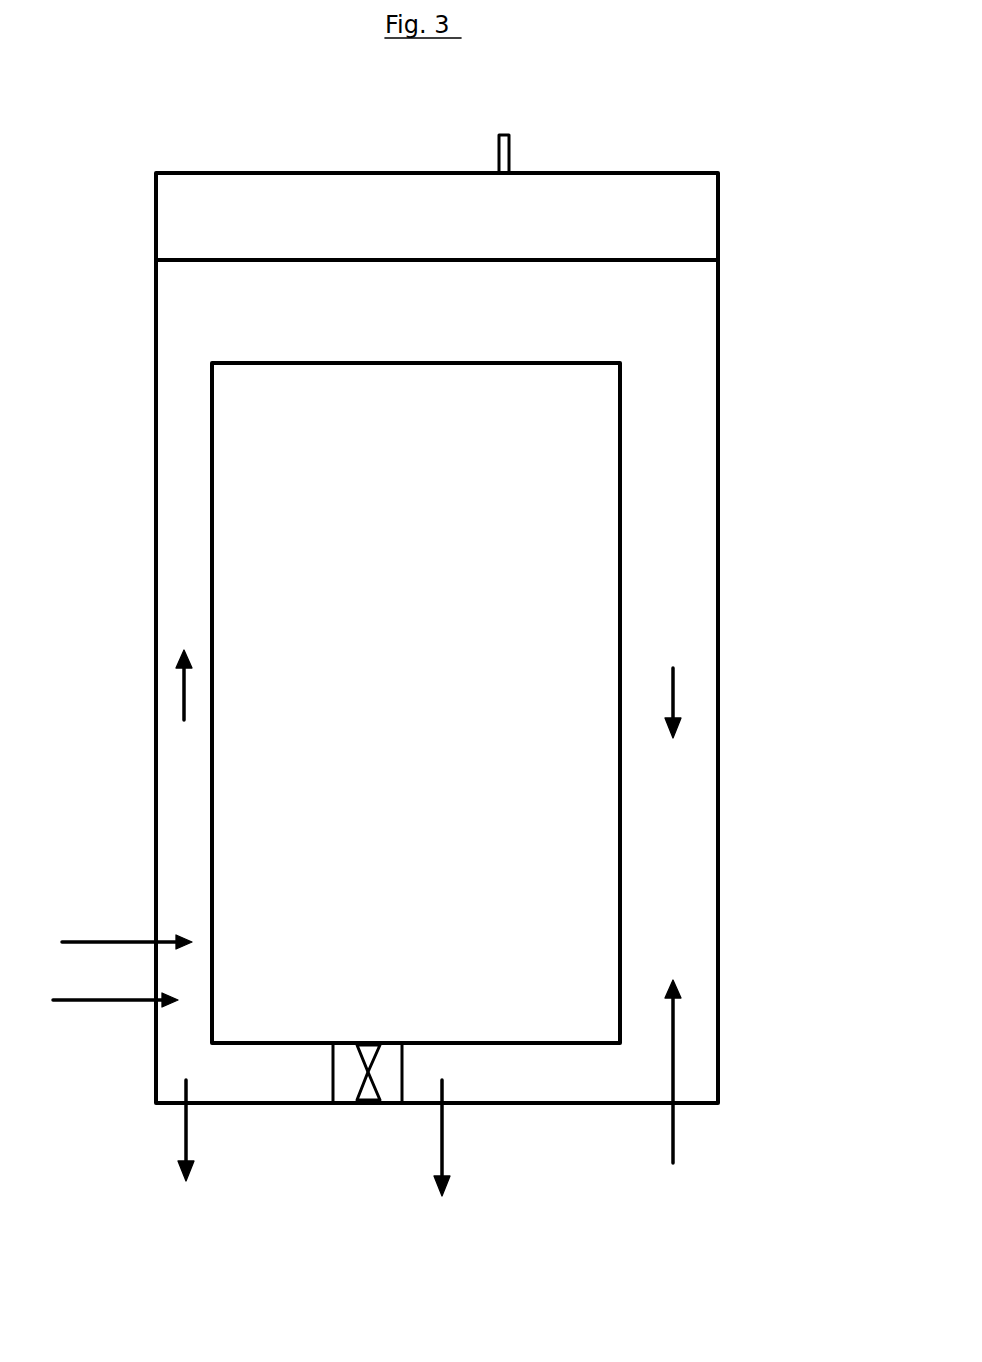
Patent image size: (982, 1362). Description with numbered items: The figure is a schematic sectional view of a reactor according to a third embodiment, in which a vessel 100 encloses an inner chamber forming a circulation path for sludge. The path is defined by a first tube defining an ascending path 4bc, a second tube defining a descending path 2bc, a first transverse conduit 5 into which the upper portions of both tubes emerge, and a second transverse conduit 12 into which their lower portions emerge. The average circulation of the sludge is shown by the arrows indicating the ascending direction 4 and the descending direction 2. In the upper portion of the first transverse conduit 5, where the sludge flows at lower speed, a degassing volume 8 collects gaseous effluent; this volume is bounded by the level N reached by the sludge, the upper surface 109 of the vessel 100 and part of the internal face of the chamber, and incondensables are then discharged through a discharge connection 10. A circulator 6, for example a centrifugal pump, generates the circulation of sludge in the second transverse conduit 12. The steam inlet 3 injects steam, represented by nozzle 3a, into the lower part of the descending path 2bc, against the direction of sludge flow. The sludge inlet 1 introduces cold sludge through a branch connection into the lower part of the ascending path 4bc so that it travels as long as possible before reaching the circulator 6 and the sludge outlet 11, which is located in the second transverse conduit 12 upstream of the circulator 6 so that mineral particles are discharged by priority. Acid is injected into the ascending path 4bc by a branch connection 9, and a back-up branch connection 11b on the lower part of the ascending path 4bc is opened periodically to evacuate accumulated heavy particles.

The vessel 100 is at (718, 445).
The upper surface 109 is at (218, 173).
The level N is at (240, 258).
The first transverse conduit 5 is at (435, 325).
The discharge connection 10 is at (497, 143).
The degassing volume 8 is at (637, 187).
The ascending path 4bc is at (175, 578).
The descending path 2bc is at (686, 615).
The ascending direction 4 is at (184, 700).
The descending direction 2 is at (673, 700).
The sludge inlet 1 is at (190, 942).
The branch connection 9 is at (178, 1000).
The nozzle 3a is at (678, 985).
The steam inlet 3 is at (673, 1135).
The second transverse conduit 12 is at (537, 1073).
The sludge outlet 11 is at (442, 1148).
The back-up branch connection 11b is at (186, 1137).
The circulator 6 is at (362, 1103).